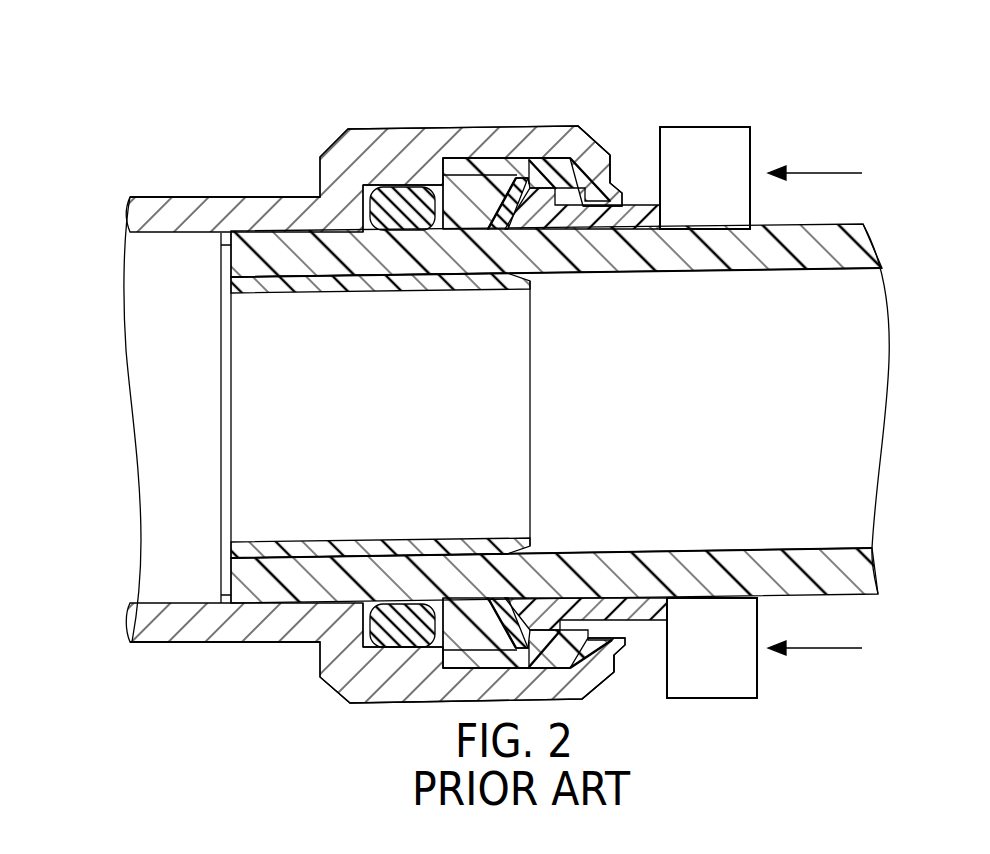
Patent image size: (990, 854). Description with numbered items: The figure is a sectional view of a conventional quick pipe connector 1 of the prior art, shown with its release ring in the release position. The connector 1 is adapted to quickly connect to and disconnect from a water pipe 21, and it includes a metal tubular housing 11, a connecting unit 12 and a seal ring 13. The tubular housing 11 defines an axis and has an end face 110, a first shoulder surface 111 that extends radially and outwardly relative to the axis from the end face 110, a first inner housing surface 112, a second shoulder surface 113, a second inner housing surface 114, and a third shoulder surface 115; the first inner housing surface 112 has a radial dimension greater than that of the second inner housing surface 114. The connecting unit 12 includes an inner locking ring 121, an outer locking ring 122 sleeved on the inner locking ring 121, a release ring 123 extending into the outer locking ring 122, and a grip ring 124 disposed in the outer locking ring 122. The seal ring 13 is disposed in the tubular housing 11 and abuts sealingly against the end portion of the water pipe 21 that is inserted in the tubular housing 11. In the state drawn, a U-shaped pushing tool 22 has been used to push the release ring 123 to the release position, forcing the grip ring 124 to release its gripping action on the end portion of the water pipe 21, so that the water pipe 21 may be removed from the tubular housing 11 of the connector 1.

The conventional quick pipe connector 1 is at (668, 90).
The tubular housing 11 is at (426, 122).
The end face 110 is at (611, 168).
The first shoulder surface 111 is at (604, 150).
The first inner housing surface 112 is at (483, 158).
The second shoulder surface 113 is at (437, 183).
The second inner housing surface 114 is at (363, 185).
The third shoulder surface 115 is at (353, 197).
The connecting unit 12 is at (635, 190).
The inner locking ring 121 is at (457, 176).
The outer locking ring 122 is at (563, 158).
The release ring 123 is at (655, 212).
The grip ring 124 is at (522, 178).
The seal ring 13 is at (385, 186).
The water pipe 21 is at (860, 244).
The U-shaped pushing tool 22 is at (704, 133).